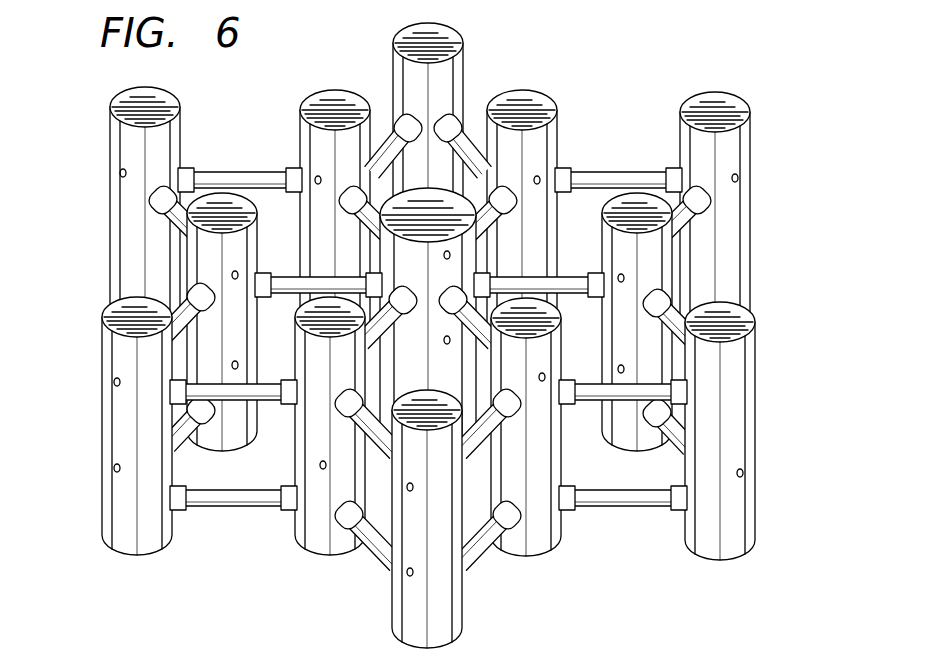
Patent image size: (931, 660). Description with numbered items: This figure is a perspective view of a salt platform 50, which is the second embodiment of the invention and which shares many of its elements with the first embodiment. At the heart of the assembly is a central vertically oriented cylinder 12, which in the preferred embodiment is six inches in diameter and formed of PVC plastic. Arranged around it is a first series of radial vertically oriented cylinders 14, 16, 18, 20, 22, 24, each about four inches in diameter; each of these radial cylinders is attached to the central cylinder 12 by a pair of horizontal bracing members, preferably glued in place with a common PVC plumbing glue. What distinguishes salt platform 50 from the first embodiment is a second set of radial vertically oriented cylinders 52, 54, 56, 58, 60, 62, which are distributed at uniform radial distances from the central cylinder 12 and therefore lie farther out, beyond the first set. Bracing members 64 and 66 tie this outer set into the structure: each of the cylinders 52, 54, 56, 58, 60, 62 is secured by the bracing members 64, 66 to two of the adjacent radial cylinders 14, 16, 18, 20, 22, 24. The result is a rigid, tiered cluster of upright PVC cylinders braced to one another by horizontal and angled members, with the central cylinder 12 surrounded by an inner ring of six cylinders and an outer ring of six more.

The salt platform 50 is at (81, 284).
The central vertically oriented cylinder 12 is at (425, 284).
The radial vertically oriented cylinder 14 is at (258, 255).
The radial vertically oriented cylinder 16 is at (326, 90).
The radial vertically oriented cylinder 18 is at (540, 96).
The radial vertically oriented cylinder 20 is at (600, 258).
The radial vertically oriented cylinder 22 is at (562, 450).
The radial vertically oriented cylinder 24 is at (293, 533).
The radial vertically oriented cylinder 52 is at (108, 135).
The radial vertically oriented cylinder 54 is at (466, 62).
The radial vertically oriented cylinder 56 is at (752, 150).
The radial vertically oriented cylinder 58 is at (757, 500).
The radial vertically oriented cylinder 60 is at (462, 608).
The radial vertically oriented cylinder 62 is at (102, 497).
The bracing member 64 is at (266, 378).
The bracing member 66 is at (222, 506).